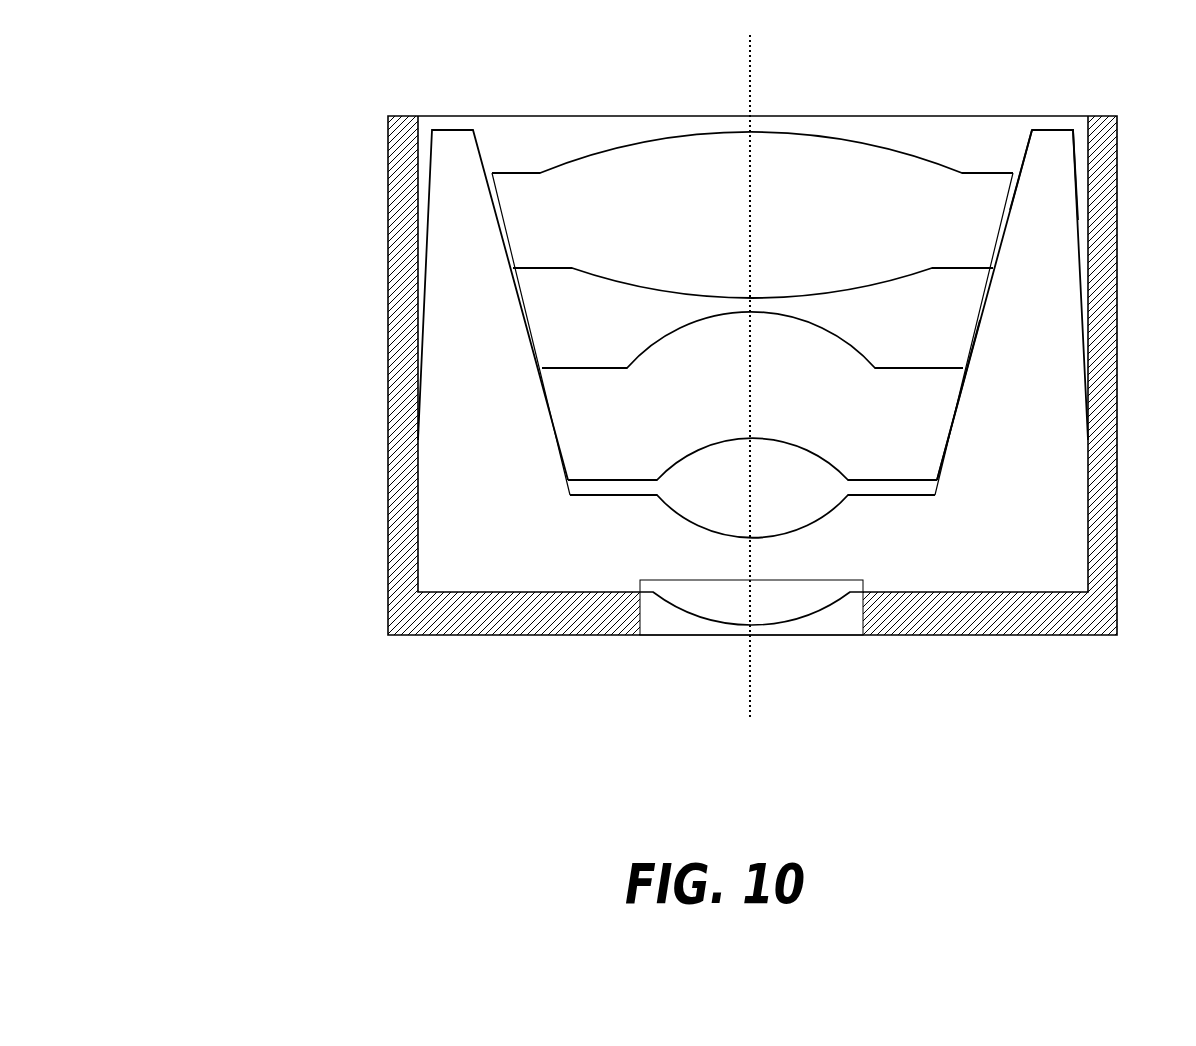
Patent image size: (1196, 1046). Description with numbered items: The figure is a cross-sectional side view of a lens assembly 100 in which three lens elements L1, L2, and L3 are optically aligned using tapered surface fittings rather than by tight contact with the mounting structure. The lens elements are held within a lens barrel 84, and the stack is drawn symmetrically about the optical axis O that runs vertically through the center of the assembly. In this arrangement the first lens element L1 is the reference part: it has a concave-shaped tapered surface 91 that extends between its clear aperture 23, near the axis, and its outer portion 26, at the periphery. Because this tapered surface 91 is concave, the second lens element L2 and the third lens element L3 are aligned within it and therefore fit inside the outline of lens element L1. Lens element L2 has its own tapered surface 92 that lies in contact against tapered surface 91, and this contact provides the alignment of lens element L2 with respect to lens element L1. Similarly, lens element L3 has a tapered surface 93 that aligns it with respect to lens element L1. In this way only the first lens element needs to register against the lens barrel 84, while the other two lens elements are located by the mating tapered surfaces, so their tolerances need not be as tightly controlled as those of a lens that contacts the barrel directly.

The lens assembly 100 is at (154, 468).
The lens barrel 84 is at (1087, 635).
The optical axis O is at (750, 655).
The clear aperture 23 is at (723, 627).
The outer portion 26 is at (458, 130).
The tapered surface 91 is at (1017, 152).
The tapered surface 93 is at (1010, 207).
The tapered surface 92 is at (960, 397).
The lens element L3 is at (503, 202).
The lens element L2 is at (560, 413).
The lens element L1 is at (420, 520).